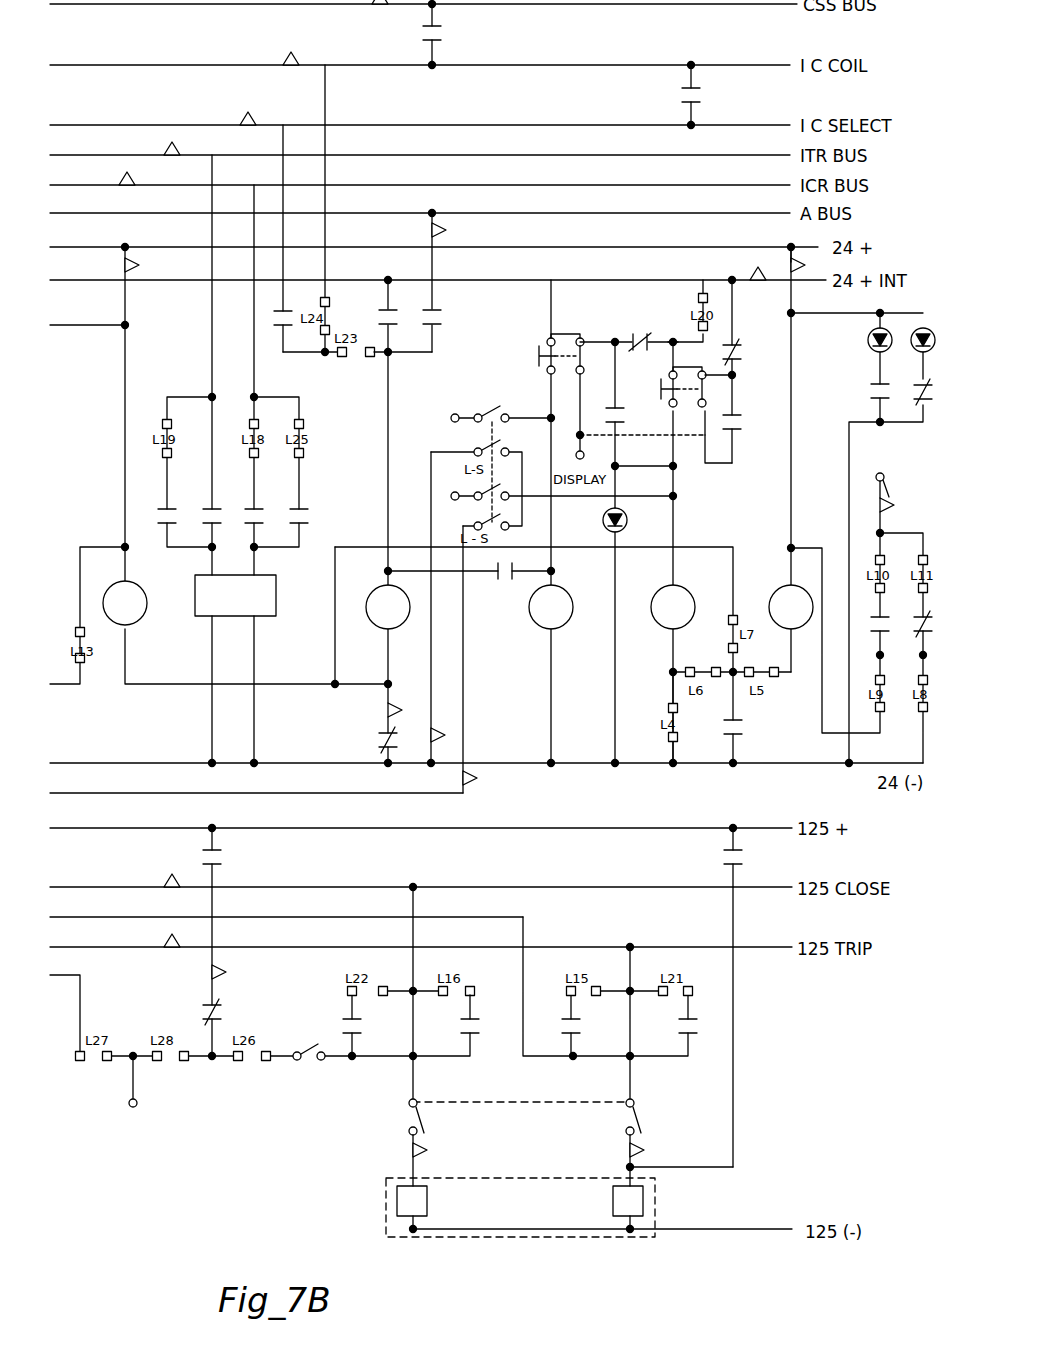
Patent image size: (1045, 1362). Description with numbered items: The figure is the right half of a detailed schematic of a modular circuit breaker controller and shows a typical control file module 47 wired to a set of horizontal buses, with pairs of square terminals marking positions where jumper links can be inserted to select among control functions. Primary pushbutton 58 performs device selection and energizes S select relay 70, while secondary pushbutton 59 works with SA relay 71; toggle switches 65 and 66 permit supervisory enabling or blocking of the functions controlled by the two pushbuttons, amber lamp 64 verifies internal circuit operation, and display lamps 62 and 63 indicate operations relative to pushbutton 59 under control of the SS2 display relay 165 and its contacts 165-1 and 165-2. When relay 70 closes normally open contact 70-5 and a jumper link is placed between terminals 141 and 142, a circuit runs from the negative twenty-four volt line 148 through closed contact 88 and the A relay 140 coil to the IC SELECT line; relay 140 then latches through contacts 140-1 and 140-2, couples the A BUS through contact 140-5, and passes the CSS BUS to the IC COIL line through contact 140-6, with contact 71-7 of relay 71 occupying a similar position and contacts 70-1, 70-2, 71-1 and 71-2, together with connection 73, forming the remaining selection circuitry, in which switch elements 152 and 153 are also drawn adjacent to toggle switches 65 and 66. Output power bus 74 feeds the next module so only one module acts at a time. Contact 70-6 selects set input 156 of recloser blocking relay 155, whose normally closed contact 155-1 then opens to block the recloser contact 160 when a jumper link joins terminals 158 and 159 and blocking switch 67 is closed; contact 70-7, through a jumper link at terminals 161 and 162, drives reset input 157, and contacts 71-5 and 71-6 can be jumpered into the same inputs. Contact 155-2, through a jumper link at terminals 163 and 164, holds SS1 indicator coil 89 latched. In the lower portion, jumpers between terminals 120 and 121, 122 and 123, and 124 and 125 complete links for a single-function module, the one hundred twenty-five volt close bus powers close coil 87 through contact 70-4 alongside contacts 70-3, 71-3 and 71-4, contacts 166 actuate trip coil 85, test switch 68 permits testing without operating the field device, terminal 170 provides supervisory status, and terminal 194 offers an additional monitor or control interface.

The control file module 47 is at (138, 1210).
The pushbutton 58 is at (536, 357).
The pushbutton 59 is at (659, 392).
The display lamp 62 is at (955, 318).
The display lamp 63 is at (868, 334).
The amber lamp 64 is at (625, 528).
The toggle switch 65 is at (490, 399).
The toggle switch 66 is at (512, 520).
The switch 67 is at (316, 1068).
The switch 68 is at (548, 1103).
The select relay 70 is at (570, 622).
The relay contact 70-1 is at (627, 415).
The relay contact 70-2 is at (646, 335).
The relay contact 70-3 is at (580, 1026).
The relay contact 70-4 is at (480, 1030).
The normally open contact 70-5 is at (276, 322).
The relay contact 70-6 is at (207, 517).
The relay contact 70-7 is at (258, 522).
The SA relay 71 is at (652, 618).
The relay contact 71-1 is at (745, 428).
The relay contact 71-2 is at (743, 352).
The relay contact 71-3 is at (700, 1030).
The relay contact 71-4 is at (350, 1028).
The relay contact 71-5 is at (160, 522).
The relay contact 71-6 is at (300, 522).
The relay contact 71-7 is at (683, 96).
The connection 73 is at (675, 339).
The output power bus 74 is at (782, 265).
The trip control coil 85 is at (643, 1202).
The close coil 87 is at (427, 1200).
The contact 88 is at (380, 740).
The SS1 indicator coil 89 is at (139, 624).
The terminal 120 is at (706, 296).
The terminal 121 is at (708, 328).
The terminal 122 is at (442, 986).
The terminal 123 is at (474, 996).
The terminal 124 is at (570, 986).
The terminal 125 is at (598, 986).
The A relay 140 is at (396, 629).
The relay contact 140-1 is at (405, 316).
The relay contact 140-2 is at (505, 580).
The relay contact 140-5 is at (440, 320).
The relay contact 140-6 is at (441, 34).
The terminal 141 is at (337, 356).
The terminal 142 is at (372, 358).
The negative 24 volt line 148 is at (422, 772).
The lock-out switch 152 is at (453, 415).
The lock-out switch 153 is at (454, 492).
The recloser blocking relay coil 155 is at (264, 604).
The normally closed contact 155-1 is at (205, 1012).
The relay contact 155-2 is at (740, 738).
The set input 156 is at (211, 555).
The reset input 157 is at (256, 563).
The terminal 158 is at (243, 1061).
The terminal 159 is at (300, 1022).
The relay contact 160 is at (205, 857).
The terminal 161 is at (252, 419).
The terminal 162 is at (262, 451).
The terminal 163 is at (731, 615).
The terminal 164 is at (729, 648).
The secondary display controlling relay 165 is at (783, 592).
The relay contact 165-1 is at (920, 623).
The relay contact 165-2 is at (882, 630).
The contacts 166 is at (726, 856).
The terminal 170 is at (884, 482).
The terminal 194 is at (138, 1107).